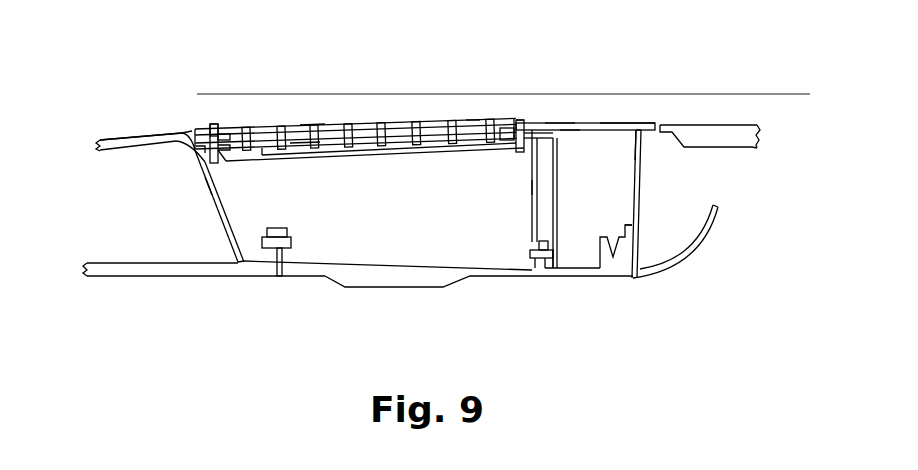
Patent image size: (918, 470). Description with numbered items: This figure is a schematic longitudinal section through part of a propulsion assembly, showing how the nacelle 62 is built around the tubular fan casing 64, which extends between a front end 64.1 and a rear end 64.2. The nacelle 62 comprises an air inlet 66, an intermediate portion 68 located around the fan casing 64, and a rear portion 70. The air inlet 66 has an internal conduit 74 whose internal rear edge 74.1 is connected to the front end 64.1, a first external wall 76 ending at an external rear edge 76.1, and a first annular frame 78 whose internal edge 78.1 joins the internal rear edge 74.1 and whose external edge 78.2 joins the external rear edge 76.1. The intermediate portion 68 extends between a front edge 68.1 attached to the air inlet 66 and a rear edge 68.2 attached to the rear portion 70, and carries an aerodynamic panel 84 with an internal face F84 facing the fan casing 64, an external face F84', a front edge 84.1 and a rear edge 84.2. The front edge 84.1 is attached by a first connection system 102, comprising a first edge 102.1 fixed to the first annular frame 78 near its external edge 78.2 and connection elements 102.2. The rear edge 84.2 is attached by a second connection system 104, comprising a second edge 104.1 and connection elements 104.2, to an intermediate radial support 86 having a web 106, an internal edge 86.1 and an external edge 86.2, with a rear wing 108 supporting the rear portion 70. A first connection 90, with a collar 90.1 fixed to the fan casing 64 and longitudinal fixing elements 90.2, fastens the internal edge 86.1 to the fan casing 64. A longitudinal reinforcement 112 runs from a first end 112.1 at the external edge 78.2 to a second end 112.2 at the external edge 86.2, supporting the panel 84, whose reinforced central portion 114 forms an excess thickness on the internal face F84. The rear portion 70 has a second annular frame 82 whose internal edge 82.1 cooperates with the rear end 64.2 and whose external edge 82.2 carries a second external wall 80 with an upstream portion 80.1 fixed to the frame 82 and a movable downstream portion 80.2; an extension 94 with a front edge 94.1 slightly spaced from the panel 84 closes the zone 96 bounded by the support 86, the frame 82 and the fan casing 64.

The nacelle 62 is at (101, 93).
The air inlet 66 is at (76, 137).
The first external wall 76 is at (113, 149).
The external rear edge 76.1 is at (178, 141).
The first annular frame 78 is at (218, 220).
The internal edge 78.1 is at (231, 262).
The external edge 78.2 is at (183, 138).
The internal conduit 74 is at (128, 278).
The internal rear edge 74.1 is at (260, 271).
The fan casing 64 is at (422, 282).
The front end 64.1 is at (287, 272).
The rear end 64.2 is at (608, 270).
The intermediate portion 68 is at (385, 94).
The front edge 68.1 is at (196, 128).
The rear edge 68.2 is at (532, 120).
The aerodynamic panel 84 is at (413, 117).
The front edge 84.1 is at (213, 133).
The rear edge 84.2 is at (505, 130).
The first connection system 102 is at (224, 173).
The first edge 102.1 is at (226, 150).
The connection elements 102.2 is at (212, 199).
The longitudinal reinforcement 112 is at (302, 141).
The first end 112.1 is at (226, 138).
The second end 112.2 is at (472, 124).
The reinforced central portion 114 is at (403, 148).
The internal face F84 is at (375, 183).
The external face F84' is at (306, 94).
The second connection system 104 is at (516, 156).
The second edge 104.1 is at (546, 141).
The connection elements 104.2 is at (517, 122).
The intermediate radial support 86 is at (528, 210).
The internal edge 86.1 is at (530, 244).
The external edge 86.2 is at (546, 160).
The web 106 is at (530, 188).
The first connection 90 is at (520, 278).
The collar 90.1 is at (545, 263).
The fixing elements 90.2 is at (558, 254).
The zone 96 is at (597, 232).
The second annular frame 82 is at (640, 203).
The internal edge 82.1 is at (640, 262).
The external edge 82.2 is at (644, 148).
The second external wall 80 is at (711, 128).
The upstream portion 80.1 is at (642, 126).
The downstream portion 80.2 is at (740, 132).
The extension 94 is at (618, 121).
The front edge 94.1 is at (565, 128).
The rear wing 108 is at (560, 133).
The rear portion 70 is at (745, 93).